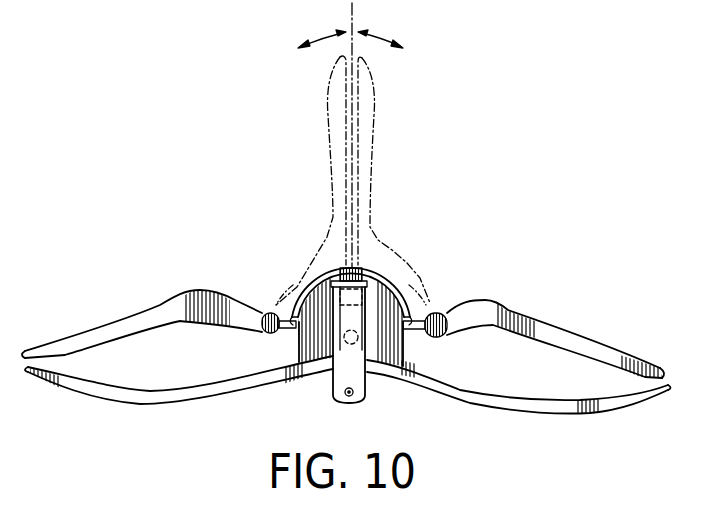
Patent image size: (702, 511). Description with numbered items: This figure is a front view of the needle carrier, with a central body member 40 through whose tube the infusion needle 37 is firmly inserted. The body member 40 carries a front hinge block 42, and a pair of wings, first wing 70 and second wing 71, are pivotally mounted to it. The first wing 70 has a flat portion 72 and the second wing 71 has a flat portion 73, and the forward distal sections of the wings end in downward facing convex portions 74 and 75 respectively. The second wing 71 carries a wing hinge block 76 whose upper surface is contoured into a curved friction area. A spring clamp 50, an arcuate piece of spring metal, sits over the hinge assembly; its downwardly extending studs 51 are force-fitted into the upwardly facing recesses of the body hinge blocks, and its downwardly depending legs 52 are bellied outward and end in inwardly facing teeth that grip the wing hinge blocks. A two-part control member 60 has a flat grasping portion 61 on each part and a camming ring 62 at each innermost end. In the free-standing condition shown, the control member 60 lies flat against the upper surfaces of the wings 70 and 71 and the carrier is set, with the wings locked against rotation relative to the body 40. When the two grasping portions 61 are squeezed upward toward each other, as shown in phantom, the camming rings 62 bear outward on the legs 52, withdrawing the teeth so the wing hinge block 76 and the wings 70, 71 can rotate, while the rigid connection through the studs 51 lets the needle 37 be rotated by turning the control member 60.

The infusion needle 37 is at (353, 395).
The body member 40 is at (333, 403).
The front hinge block 42 is at (331, 376).
The spring clamp 50 is at (384, 258).
The stud 51 is at (350, 266).
The leg 52 is at (297, 276).
The control member 60 is at (110, 316).
The grasping portion 61 is at (333, 180).
The camming ring 62 is at (285, 332).
The first wing 70 is at (451, 400).
The second wing 71 is at (210, 405).
The flat portion 72 is at (537, 402).
The flat portion 73 is at (183, 396).
The convex portion 74 is at (620, 411).
The convex portion 75 is at (85, 398).
The wing hinge block 76 is at (366, 358).